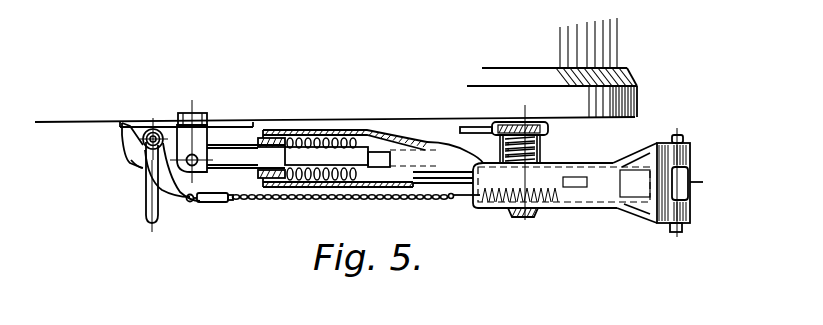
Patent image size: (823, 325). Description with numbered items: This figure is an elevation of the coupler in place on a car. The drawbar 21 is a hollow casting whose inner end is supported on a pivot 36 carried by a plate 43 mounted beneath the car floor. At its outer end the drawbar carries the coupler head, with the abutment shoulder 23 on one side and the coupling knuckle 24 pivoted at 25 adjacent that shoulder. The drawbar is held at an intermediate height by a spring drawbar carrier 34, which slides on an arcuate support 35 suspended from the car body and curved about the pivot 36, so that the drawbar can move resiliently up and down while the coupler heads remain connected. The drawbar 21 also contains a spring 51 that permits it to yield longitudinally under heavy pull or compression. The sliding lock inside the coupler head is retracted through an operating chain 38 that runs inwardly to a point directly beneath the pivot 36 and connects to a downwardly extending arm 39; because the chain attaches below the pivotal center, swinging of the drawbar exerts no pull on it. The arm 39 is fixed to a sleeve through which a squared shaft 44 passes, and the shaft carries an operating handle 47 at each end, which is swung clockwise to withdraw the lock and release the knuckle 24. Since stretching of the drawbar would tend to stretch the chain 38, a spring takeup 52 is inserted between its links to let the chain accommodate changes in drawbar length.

The drawbar 21 is at (392, 133).
The abutment shoulder 23 is at (652, 221).
The coupling knuckle 24 is at (692, 190).
The pivot 25 is at (682, 140).
The spring drawbar carrier 34 is at (547, 150).
The arcuate support 35 is at (528, 120).
The pivot 36 is at (196, 117).
The operating chain 38 is at (330, 200).
The downwardly extending arm 39 is at (146, 178).
The plate 43 is at (243, 124).
The squared shaft 44 is at (152, 128).
The operating handle 47 is at (147, 222).
The spring 51 is at (322, 148).
The spring takeup 52 is at (224, 206).